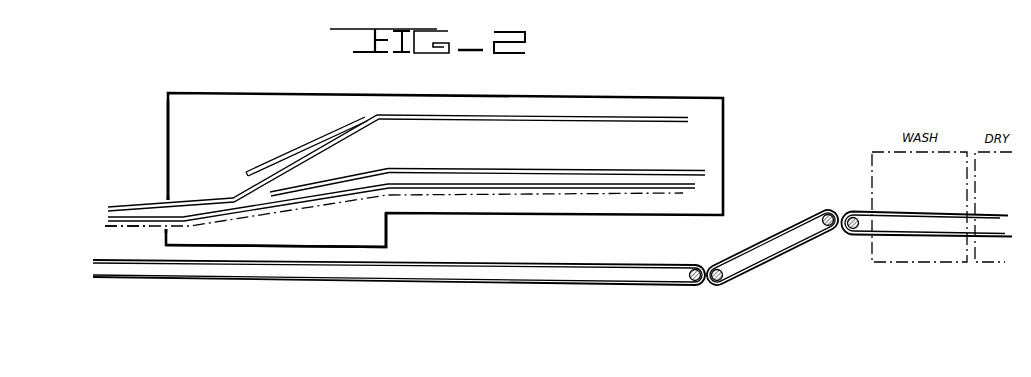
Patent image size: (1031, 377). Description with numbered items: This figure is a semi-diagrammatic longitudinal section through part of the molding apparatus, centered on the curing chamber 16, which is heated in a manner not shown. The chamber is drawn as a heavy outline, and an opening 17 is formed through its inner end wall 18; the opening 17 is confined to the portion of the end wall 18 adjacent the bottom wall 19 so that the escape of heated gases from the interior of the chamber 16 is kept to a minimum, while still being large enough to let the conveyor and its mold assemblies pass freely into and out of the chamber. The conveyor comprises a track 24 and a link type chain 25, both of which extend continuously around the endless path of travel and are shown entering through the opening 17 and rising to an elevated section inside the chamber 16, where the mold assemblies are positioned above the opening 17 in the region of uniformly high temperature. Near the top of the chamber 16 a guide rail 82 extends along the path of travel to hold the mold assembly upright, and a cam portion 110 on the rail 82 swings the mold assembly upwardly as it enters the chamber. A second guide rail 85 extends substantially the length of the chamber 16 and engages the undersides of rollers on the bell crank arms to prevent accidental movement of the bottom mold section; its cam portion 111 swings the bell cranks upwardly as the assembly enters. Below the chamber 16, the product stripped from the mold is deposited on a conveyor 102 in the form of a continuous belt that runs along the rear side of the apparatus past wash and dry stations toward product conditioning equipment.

The curing chamber 16 is at (553, 93).
The opening 17 is at (163, 203).
The inner end wall 18 is at (167, 137).
The bottom wall 19 is at (387, 243).
The track 24 is at (101, 216).
The link type chain 25 is at (139, 232).
The guide rail 82 is at (653, 120).
The guide rail 85 is at (552, 170).
The conveyor 102 is at (588, 260).
The cam portion 110 is at (297, 162).
The cam portion 111 is at (325, 182).